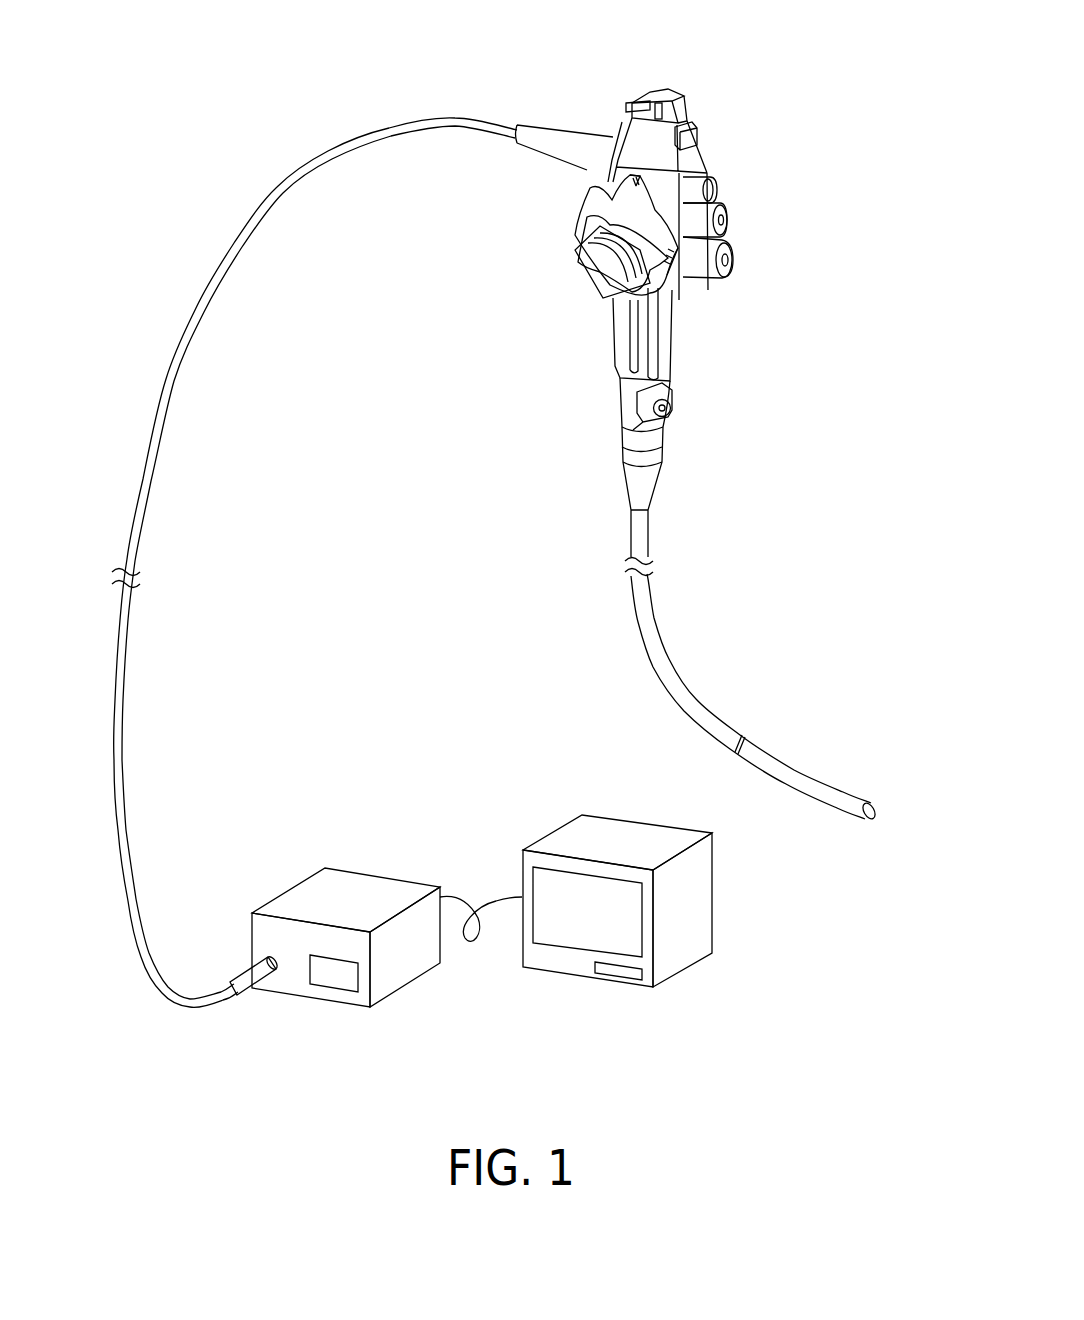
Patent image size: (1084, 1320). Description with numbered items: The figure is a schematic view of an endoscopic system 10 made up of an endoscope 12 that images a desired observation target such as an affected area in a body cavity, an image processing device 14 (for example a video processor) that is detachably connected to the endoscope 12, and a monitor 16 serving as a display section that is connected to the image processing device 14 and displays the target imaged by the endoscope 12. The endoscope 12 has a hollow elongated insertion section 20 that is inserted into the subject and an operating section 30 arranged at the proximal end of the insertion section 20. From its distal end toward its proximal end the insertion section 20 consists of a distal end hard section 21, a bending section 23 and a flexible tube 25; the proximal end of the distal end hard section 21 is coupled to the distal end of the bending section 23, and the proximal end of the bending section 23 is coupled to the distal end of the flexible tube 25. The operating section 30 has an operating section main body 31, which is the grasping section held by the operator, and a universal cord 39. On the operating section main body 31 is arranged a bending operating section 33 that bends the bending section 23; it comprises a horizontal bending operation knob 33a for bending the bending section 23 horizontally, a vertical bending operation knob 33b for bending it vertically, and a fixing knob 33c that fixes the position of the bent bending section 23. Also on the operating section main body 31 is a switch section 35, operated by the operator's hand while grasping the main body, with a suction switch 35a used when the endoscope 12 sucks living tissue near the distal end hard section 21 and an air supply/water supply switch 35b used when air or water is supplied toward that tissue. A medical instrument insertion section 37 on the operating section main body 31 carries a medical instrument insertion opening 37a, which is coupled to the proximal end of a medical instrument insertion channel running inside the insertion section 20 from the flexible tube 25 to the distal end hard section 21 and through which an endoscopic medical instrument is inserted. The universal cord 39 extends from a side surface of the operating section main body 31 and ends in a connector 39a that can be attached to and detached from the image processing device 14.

The endoscopic system 10 is at (248, 90).
The endoscope 12 is at (574, 398).
The image processing device 14 is at (430, 992).
The monitor 16 is at (744, 905).
The insertion section 20 is at (774, 673).
The distal end hard section 21 is at (876, 776).
The bending section 23 is at (842, 818).
The flexible tube 25 is at (650, 598).
The operating section 30 is at (594, 323).
The operating section main body 31 is at (673, 300).
The bending operating section 33 is at (560, 239).
The horizontal bending operation knob 33a is at (577, 228).
The vertical bending operation knob 33b is at (577, 192).
The fixing knob 33c is at (569, 264).
The switch section 35 is at (751, 198).
The suction switch 35a is at (732, 262).
The air supply/water supply switch 35b is at (728, 220).
The medical instrument insertion section 37 is at (686, 477).
The medical instrument insertion opening 37a is at (677, 407).
The universal cord 39 is at (230, 241).
The connector 39a is at (266, 998).